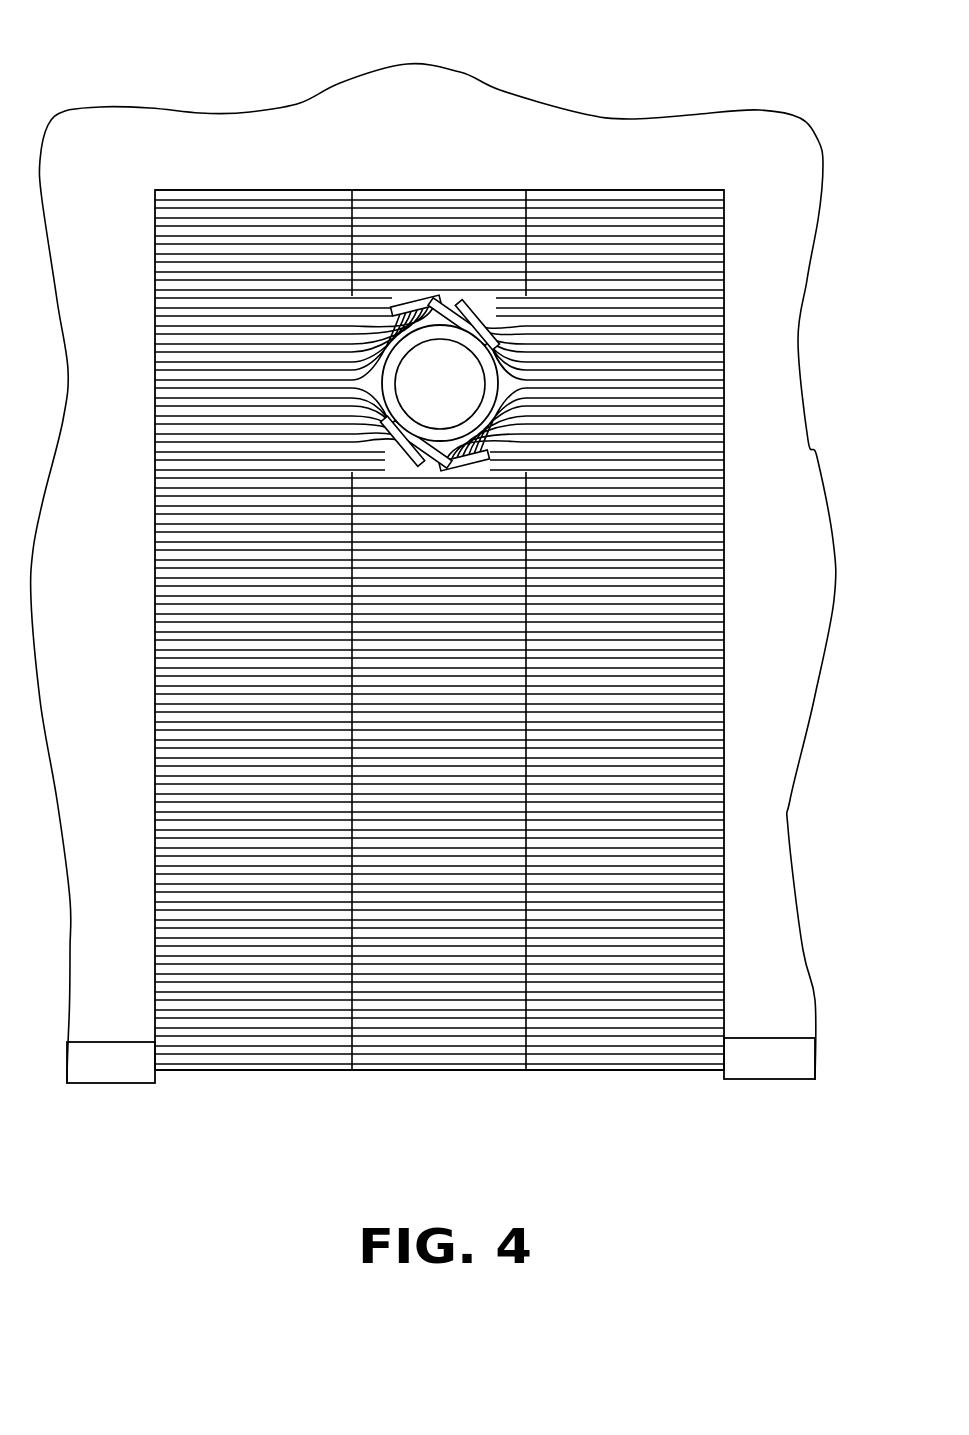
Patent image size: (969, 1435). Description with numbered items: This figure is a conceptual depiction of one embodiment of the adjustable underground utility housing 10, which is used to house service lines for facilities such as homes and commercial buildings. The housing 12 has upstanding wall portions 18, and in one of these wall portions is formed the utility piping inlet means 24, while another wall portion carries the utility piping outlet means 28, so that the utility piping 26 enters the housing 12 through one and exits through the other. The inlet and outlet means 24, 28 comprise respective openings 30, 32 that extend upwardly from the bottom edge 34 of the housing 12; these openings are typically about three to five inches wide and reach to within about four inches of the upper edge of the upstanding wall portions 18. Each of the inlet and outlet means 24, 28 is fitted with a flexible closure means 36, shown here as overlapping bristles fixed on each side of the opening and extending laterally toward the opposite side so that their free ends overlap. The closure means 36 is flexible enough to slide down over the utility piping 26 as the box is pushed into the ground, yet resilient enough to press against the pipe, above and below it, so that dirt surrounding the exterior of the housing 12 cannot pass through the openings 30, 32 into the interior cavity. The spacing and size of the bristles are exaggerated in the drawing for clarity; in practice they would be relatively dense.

The adjustable underground utility housing 10 is at (178, 75).
The housing 12 is at (817, 457).
The upstanding wall portions 18 is at (787, 562).
The utility piping inlet means 24 is at (439, 601).
The utility piping outlet means 28 is at (267, 188).
The utility piping 26 is at (410, 355).
The opening 30 is at (206, 1094).
The opening 32 is at (187, 1070).
The bottom edge 34 is at (727, 1077).
The flexible closure means 36 is at (535, 1087).